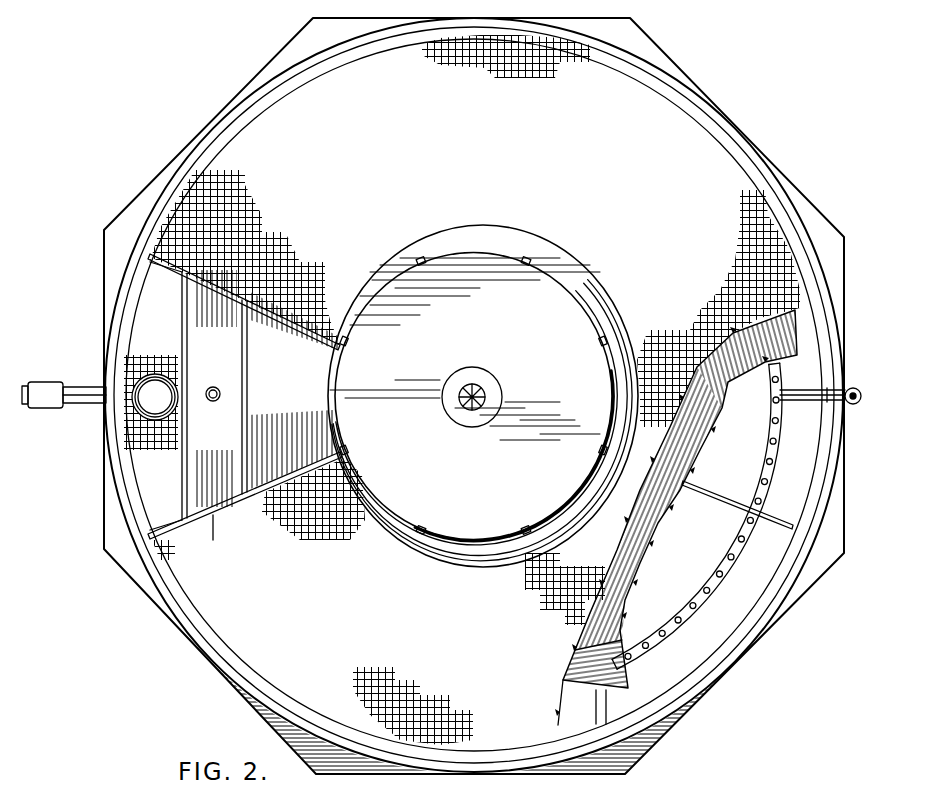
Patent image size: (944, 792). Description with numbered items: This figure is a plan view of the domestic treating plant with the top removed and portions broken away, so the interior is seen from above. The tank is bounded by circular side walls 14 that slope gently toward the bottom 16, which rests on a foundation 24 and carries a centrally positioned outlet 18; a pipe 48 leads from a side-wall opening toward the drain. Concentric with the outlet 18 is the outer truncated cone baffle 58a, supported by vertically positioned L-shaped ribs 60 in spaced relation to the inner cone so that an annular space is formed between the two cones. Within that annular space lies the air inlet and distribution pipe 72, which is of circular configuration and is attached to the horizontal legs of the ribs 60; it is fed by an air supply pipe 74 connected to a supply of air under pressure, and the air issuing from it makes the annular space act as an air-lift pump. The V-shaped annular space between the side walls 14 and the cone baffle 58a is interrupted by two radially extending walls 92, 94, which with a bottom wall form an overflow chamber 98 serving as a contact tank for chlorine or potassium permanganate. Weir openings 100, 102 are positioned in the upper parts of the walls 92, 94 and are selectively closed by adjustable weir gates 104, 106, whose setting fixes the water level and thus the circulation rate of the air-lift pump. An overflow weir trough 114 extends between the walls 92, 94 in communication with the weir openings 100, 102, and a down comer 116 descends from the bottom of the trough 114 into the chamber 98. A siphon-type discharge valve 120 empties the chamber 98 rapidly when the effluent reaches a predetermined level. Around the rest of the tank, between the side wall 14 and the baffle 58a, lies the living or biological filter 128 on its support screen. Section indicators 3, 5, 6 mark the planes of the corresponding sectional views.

The side walls 14 is at (682, 112).
The bottom 16 is at (504, 485).
The outlet 18 is at (478, 392).
The foundation 24 is at (816, 578).
The pipe 48 is at (75, 387).
The outer truncated cone baffle 58a is at (571, 293).
The L-shaped ribs 60 is at (598, 342).
The air inlet and distribution pipe 72 is at (773, 452).
The air supply pipe 74 is at (804, 391).
The radially extending wall 92 is at (292, 452).
The radially extending wall 94 is at (300, 325).
The overflow chamber 98 is at (155, 396).
The weir opening 100 is at (222, 505).
The weir opening 102 is at (242, 292).
The adjustable weir gate 104 is at (222, 512).
The adjustable weir gate 106 is at (240, 290).
The overflow weir trough 114 is at (183, 422).
The down comer 116 is at (215, 388).
The discharge valve 120 is at (153, 388).
The living or biological filter 128 is at (245, 210).
The section line 3- 3 is at (228, 258).
The section line 5- 5 is at (731, 616).
The section line 6- 6 is at (779, 542).